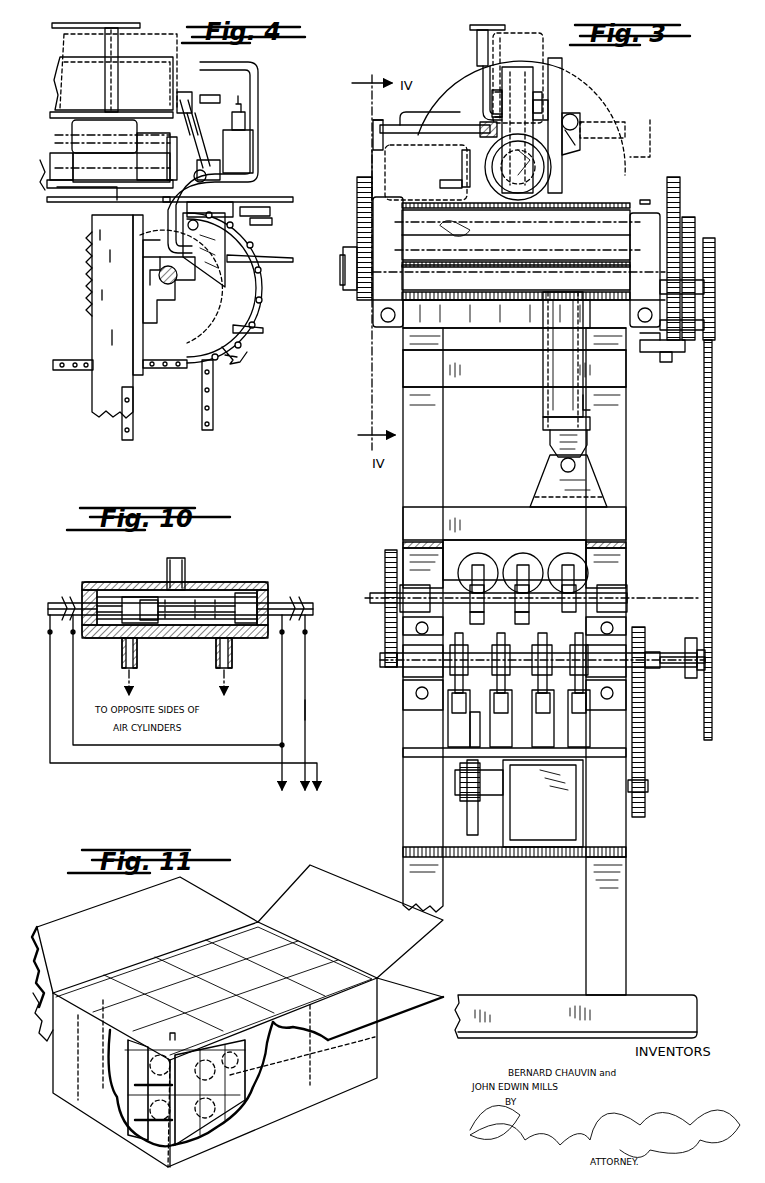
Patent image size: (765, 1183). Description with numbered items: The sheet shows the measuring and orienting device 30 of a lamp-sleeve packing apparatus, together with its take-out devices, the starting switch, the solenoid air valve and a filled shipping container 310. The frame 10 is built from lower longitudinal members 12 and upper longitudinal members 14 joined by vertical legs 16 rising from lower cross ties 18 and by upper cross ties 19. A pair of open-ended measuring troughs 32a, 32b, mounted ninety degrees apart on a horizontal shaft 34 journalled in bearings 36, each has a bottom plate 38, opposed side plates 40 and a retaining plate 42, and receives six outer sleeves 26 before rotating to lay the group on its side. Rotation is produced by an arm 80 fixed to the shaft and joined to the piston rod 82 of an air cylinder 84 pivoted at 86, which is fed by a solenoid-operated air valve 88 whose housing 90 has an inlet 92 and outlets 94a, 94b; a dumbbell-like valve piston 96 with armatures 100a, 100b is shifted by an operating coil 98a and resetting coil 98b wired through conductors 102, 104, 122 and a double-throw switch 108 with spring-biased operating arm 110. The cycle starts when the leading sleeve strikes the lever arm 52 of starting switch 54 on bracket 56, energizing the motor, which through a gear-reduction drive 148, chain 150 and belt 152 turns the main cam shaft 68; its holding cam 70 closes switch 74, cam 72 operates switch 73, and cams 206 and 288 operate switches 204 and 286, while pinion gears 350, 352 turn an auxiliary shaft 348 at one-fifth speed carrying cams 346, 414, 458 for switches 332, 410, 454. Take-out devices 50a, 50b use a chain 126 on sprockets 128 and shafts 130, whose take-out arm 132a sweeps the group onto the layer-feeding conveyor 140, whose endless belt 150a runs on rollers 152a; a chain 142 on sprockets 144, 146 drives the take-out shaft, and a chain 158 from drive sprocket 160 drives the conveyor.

In FIG. 3, the frame 10 is at (400, 483).
In FIG. 3, the lower longitudinal members 12 is at (626, 870).
In FIG. 3, the upper longitudinal members 14 is at (625, 548).
In FIG. 4, the vertical legs 16 is at (102, 412).
In FIG. 3, the vertical legs 16 is at (620, 468).
In FIG. 3, the lower cross ties 18 is at (530, 1000).
In FIG. 4, the upper cross ties 19 is at (137, 395).
In FIG. 3, the upper cross ties 19 is at (470, 372).
In FIG. 4, the outer sleeves 26 is at (140, 32).
In FIG. 3, the outer sleeves 26 is at (530, 36).
In FIG. 11, the outer sleeves 26 is at (100, 990).
In FIG. 3, the measuring and orienting device 30 is at (428, 55).
In FIG. 4, the measuring trough 32a is at (212, 66).
In FIG. 3, the measuring trough 32a is at (566, 70).
In FIG. 4, the measuring trough 32b is at (78, 205).
In FIG. 3, the measuring trough 32b is at (405, 137).
In FIG. 4, the horizontal shaft 34 is at (65, 190).
In FIG. 3, the horizontal shaft 34 is at (470, 126).
In FIG. 4, the bearings 36 is at (160, 112).
In FIG. 3, the bearings 36 is at (552, 190).
In FIG. 4, the longitudinal bottom plate 38 is at (75, 90).
In FIG. 3, the longitudinal bottom plate 38 is at (588, 104).
In FIG. 4, the side plates 40 is at (155, 52).
In FIG. 3, the side plates 40 is at (522, 90).
In FIG. 4, the retaining plate 42 is at (62, 20).
In FIG. 3, the retaining plate 42 is at (475, 27).
In FIG. 4, the take-out device 50a is at (80, 378).
In FIG. 3, the take-out device 50a is at (680, 182).
In FIG. 3, the take-out device 50b is at (357, 365).
In FIG. 4, the lever arm 52 is at (195, 130).
In FIG. 3, the lever arm 52 is at (548, 105).
In FIG. 4, the starting switch 54 is at (240, 140).
In FIG. 4, the bracket 56 is at (240, 100).
In FIG. 3, the bracket 56 is at (512, 82).
In FIG. 3, the cam shaft 68 is at (672, 668).
In FIG. 3, the holding cam 70 is at (580, 655).
In FIG. 3, the cam 72 is at (408, 630).
In FIG. 3, the switch 73 is at (455, 725).
In FIG. 3, the switch 74 is at (588, 720).
In FIG. 3, the arm 80 is at (583, 122).
In FIG. 3, the piston rod 82 is at (565, 185).
In FIG. 3, the air cylinder 84 is at (560, 396).
In FIG. 3, the pivot 86 is at (537, 492).
In FIG. 3, the solenoid-operated air valve 88 is at (550, 428).
In FIG. 10, the solenoid-operated air valve 88 is at (240, 582).
In FIG. 10, the housing 90 is at (122, 583).
In FIG. 10, the high-pressure air inlet 92 is at (185, 572).
In FIG. 3, the high-pressure air outlet 94a is at (586, 410).
In FIG. 10, the high-pressure air outlet 94a is at (137, 665).
In FIG. 3, the high-pressure air outlet 94b is at (548, 340).
In FIG. 10, the high-pressure air outlet 94b is at (216, 660).
In FIG. 10, the valve piston 96 is at (148, 597).
In FIG. 10, the operating coil 98a is at (60, 600).
In FIG. 10, the resetting coil 98b is at (310, 595).
In FIG. 10, the armature 100a is at (78, 600).
In FIG. 10, the armature 100b is at (285, 600).
In FIG. 10, the conductor 102 is at (230, 745).
In FIG. 10, the conductor 104 is at (308, 717).
In FIG. 3, the double-throw switch 108 is at (445, 199).
In FIG. 3, the operating arm 110 is at (462, 165).
In FIG. 10, the conductor 122 is at (152, 772).
In FIG. 4, the chain 126 is at (66, 358).
In FIG. 3, the chain 126 is at (680, 192).
In FIG. 4, the sprockets 128 is at (88, 296).
In FIG. 3, the sprockets 128 is at (352, 280).
In FIG. 4, the shafts 130 is at (172, 285).
In FIG. 3, the shafts 130 is at (355, 258).
In FIG. 4, the take-out arm 132a is at (232, 370).
In FIG. 3, the take-out arm 132a is at (645, 358).
In FIG. 4, the layer-feeding conveyor 140 is at (283, 197).
In FIG. 3, the layer-feeding conveyor 140 is at (622, 198).
In FIG. 4, the chain 142 is at (215, 414).
In FIG. 3, the chain 142 is at (703, 506).
In FIG. 3, the sprocket 144 is at (708, 238).
In FIG. 3, the sprocket 146 is at (690, 640).
In FIG. 3, the gear-reduction drive 148 is at (550, 850).
In FIG. 3, the chain 150 is at (646, 755).
In FIG. 3, the endless belt 150a is at (412, 200).
In FIG. 3, the belt 152 is at (478, 840).
In FIG. 4, the rollers 152a is at (210, 190).
In FIG. 3, the rollers 152a is at (595, 235).
In FIG. 4, the chain 158 is at (245, 358).
In FIG. 3, the chain 158 is at (688, 215).
In FIG. 4, the drive sprocket 160 is at (258, 310).
In FIG. 3, the switch 204 is at (458, 710).
In FIG. 3, the cam 206 is at (462, 655).
In FIG. 3, the double-contact switch 286 is at (535, 705).
In FIG. 3, the cam 288 is at (540, 655).
In FIG. 11, the shipping container 310 is at (343, 1075).
In FIG. 3, the double-contact switch 332 is at (478, 552).
In FIG. 3, the cam 346 is at (448, 578).
In FIG. 3, the shaft 348 is at (372, 598).
In FIG. 3, the pinion gear 350 is at (383, 667).
In FIG. 3, the pinion gear 352 is at (385, 565).
In FIG. 3, the switch 410 is at (522, 553).
In FIG. 3, the cam 414 is at (480, 612).
In FIG. 3, the switch 454 is at (572, 555).
In FIG. 3, the cam 458 is at (545, 618).